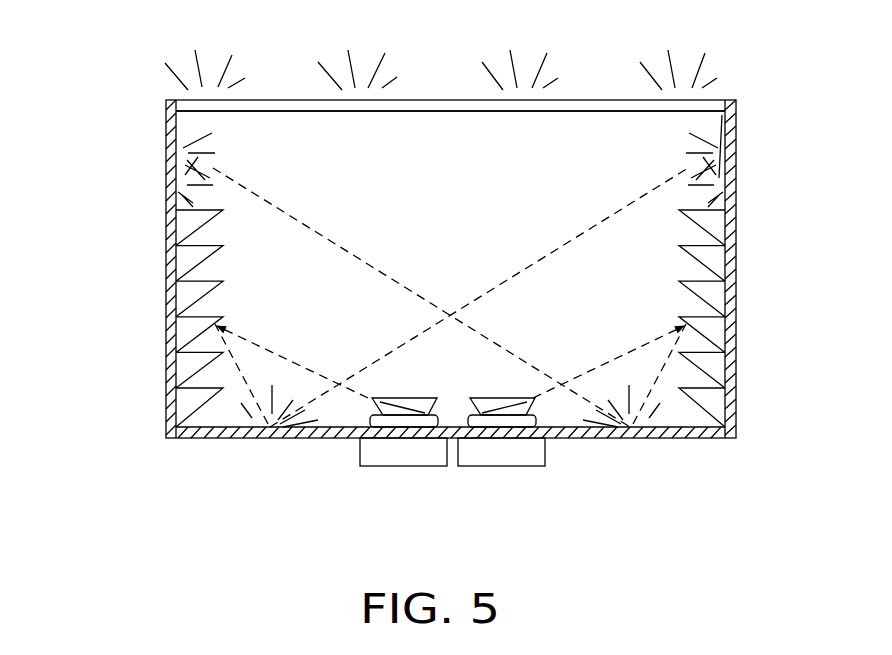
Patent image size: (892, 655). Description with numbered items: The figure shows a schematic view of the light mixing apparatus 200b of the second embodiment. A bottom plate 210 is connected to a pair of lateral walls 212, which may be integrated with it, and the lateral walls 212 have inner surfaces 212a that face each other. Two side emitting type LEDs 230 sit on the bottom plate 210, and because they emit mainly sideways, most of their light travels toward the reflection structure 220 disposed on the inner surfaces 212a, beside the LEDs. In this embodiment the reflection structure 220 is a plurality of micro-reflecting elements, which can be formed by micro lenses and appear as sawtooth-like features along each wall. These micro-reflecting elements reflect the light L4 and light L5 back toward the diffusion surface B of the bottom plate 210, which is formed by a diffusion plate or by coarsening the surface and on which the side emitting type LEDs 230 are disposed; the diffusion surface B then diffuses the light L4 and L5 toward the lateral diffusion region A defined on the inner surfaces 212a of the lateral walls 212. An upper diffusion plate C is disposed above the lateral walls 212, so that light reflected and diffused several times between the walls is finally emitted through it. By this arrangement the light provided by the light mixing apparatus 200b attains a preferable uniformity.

The light mixing apparatus 200b is at (743, 537).
The bottom plate 210 is at (208, 439).
The lateral wall 212 is at (166, 157).
The inner surface 212a is at (180, 267).
The reflection structure 220 is at (723, 231).
The side emitting type LED 230 is at (493, 459).
The lateral diffusion region A is at (185, 136).
The diffusion surface B is at (358, 418).
The upper diffusion plate C is at (597, 108).
The light L4 is at (257, 347).
The light L5 is at (664, 337).